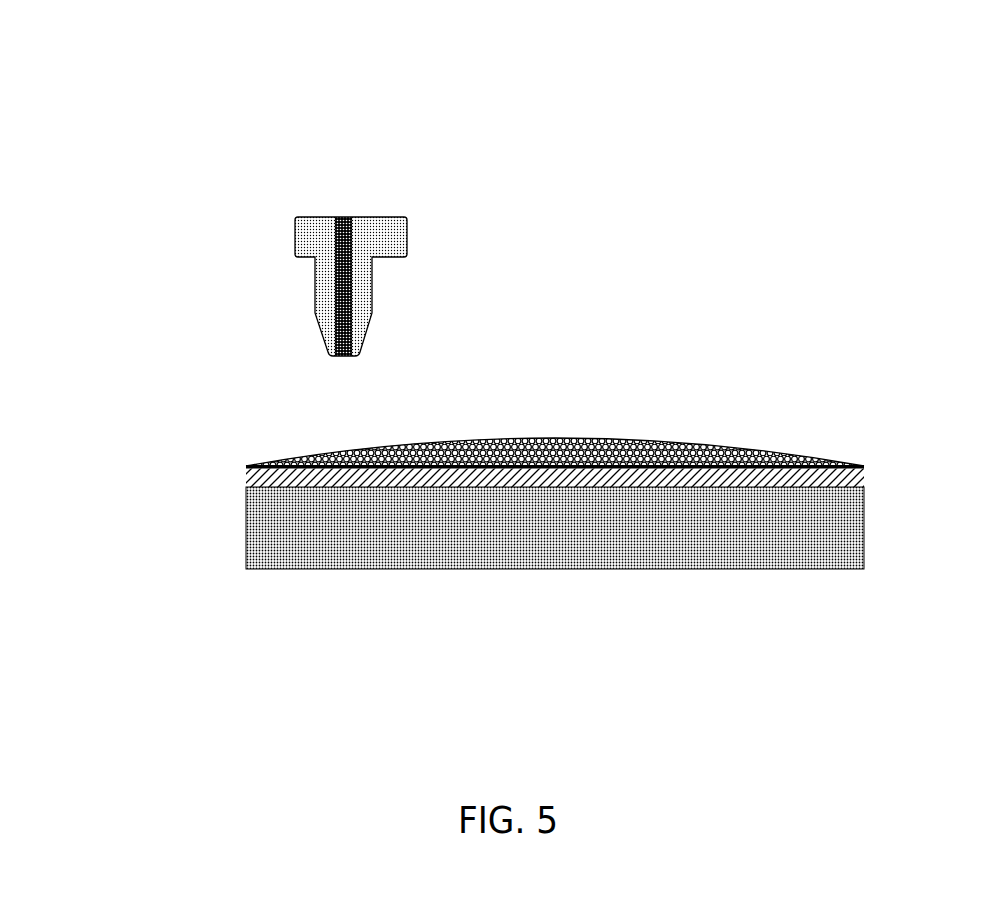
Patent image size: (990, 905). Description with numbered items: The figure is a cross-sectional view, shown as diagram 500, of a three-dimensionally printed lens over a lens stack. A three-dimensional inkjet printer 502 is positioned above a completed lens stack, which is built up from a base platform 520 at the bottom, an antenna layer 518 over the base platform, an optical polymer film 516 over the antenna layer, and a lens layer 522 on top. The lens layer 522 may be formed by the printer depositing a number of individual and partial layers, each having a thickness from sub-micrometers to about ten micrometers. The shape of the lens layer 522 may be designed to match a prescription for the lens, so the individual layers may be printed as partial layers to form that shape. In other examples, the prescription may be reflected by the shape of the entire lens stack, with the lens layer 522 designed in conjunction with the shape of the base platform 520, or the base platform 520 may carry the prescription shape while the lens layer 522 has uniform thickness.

The diagram 500 is at (60, 61).
The 3D inkjet printer 502 is at (377, 217).
The optical polymer film 516 is at (247, 466).
The antenna layer 518 is at (247, 474).
The base platform 520 is at (247, 545).
The lens layer 522 is at (855, 463).